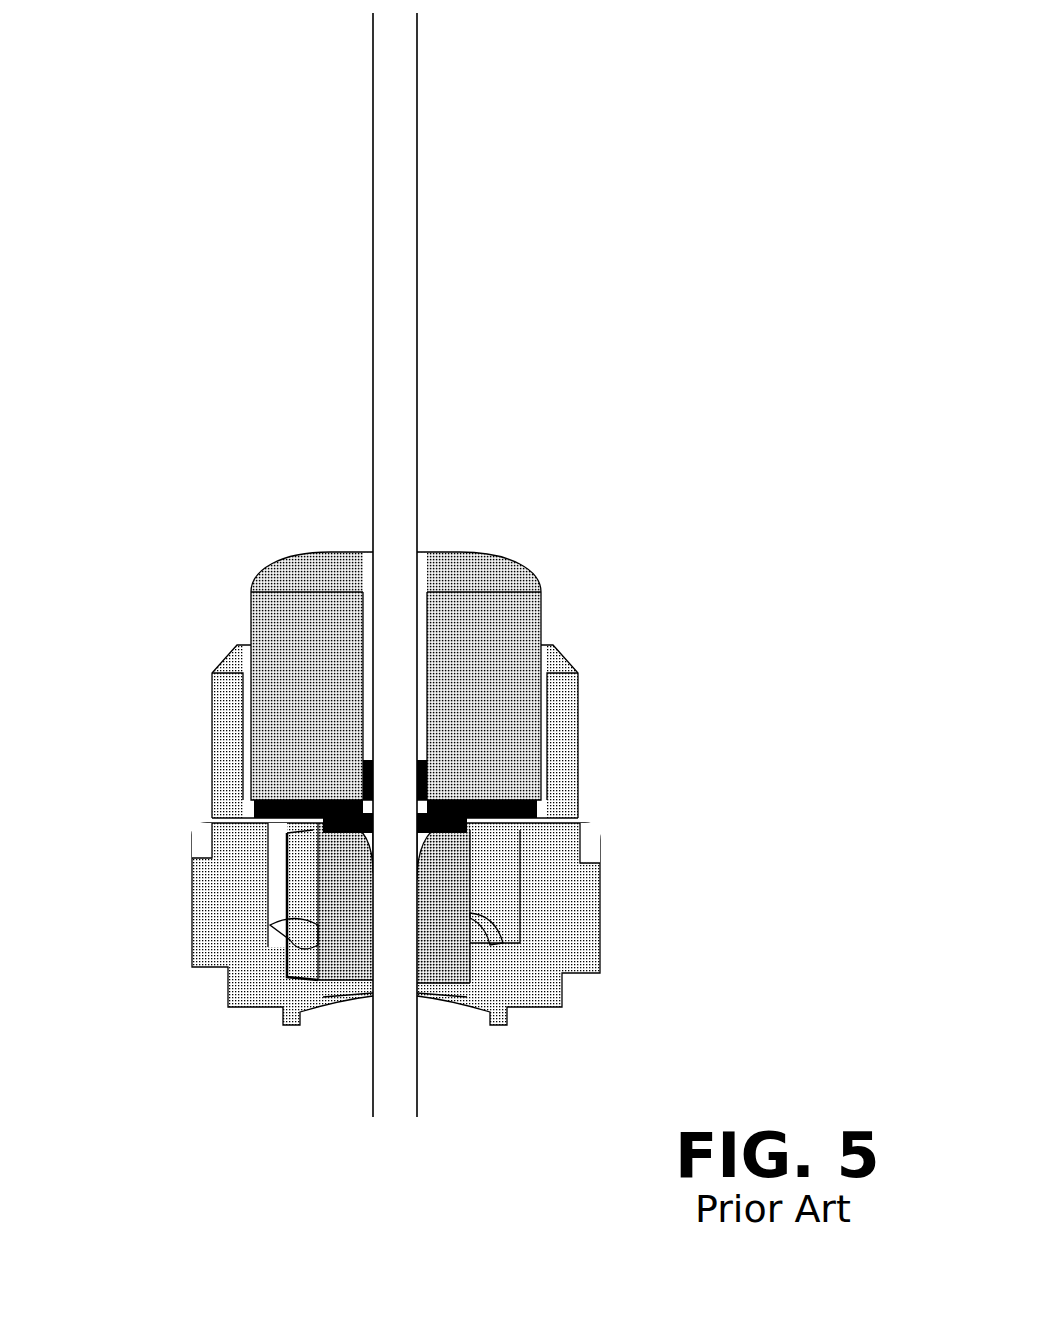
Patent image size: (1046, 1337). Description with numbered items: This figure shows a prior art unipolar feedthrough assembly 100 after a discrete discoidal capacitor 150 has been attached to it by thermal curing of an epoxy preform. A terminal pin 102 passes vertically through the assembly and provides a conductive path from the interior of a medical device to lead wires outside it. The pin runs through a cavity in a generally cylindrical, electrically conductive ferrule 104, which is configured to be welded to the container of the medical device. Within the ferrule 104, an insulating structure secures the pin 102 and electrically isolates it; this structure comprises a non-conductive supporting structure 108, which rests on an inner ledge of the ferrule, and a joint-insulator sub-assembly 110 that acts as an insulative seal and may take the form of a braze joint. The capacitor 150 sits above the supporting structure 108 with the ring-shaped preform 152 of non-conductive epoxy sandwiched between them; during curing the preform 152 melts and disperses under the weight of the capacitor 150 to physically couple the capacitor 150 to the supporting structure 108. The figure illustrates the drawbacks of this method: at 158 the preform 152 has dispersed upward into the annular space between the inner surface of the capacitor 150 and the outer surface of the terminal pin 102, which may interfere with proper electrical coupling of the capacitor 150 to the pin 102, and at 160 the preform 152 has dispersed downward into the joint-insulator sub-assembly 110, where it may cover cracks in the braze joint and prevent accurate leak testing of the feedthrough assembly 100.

The feedthrough assembly 100 is at (423, 565).
The terminal pin 102 is at (403, 82).
The ferrule 104 is at (396, 924).
The supporting structure 108 is at (560, 787).
The joint-insulator sub-assembly 110 is at (290, 872).
The discrete discoidal capacitor 150 is at (538, 604).
The ring-shaped preform 152 is at (253, 815).
The upward dispersal of preform 158 is at (423, 782).
The downward dispersal of preform 160 is at (425, 832).